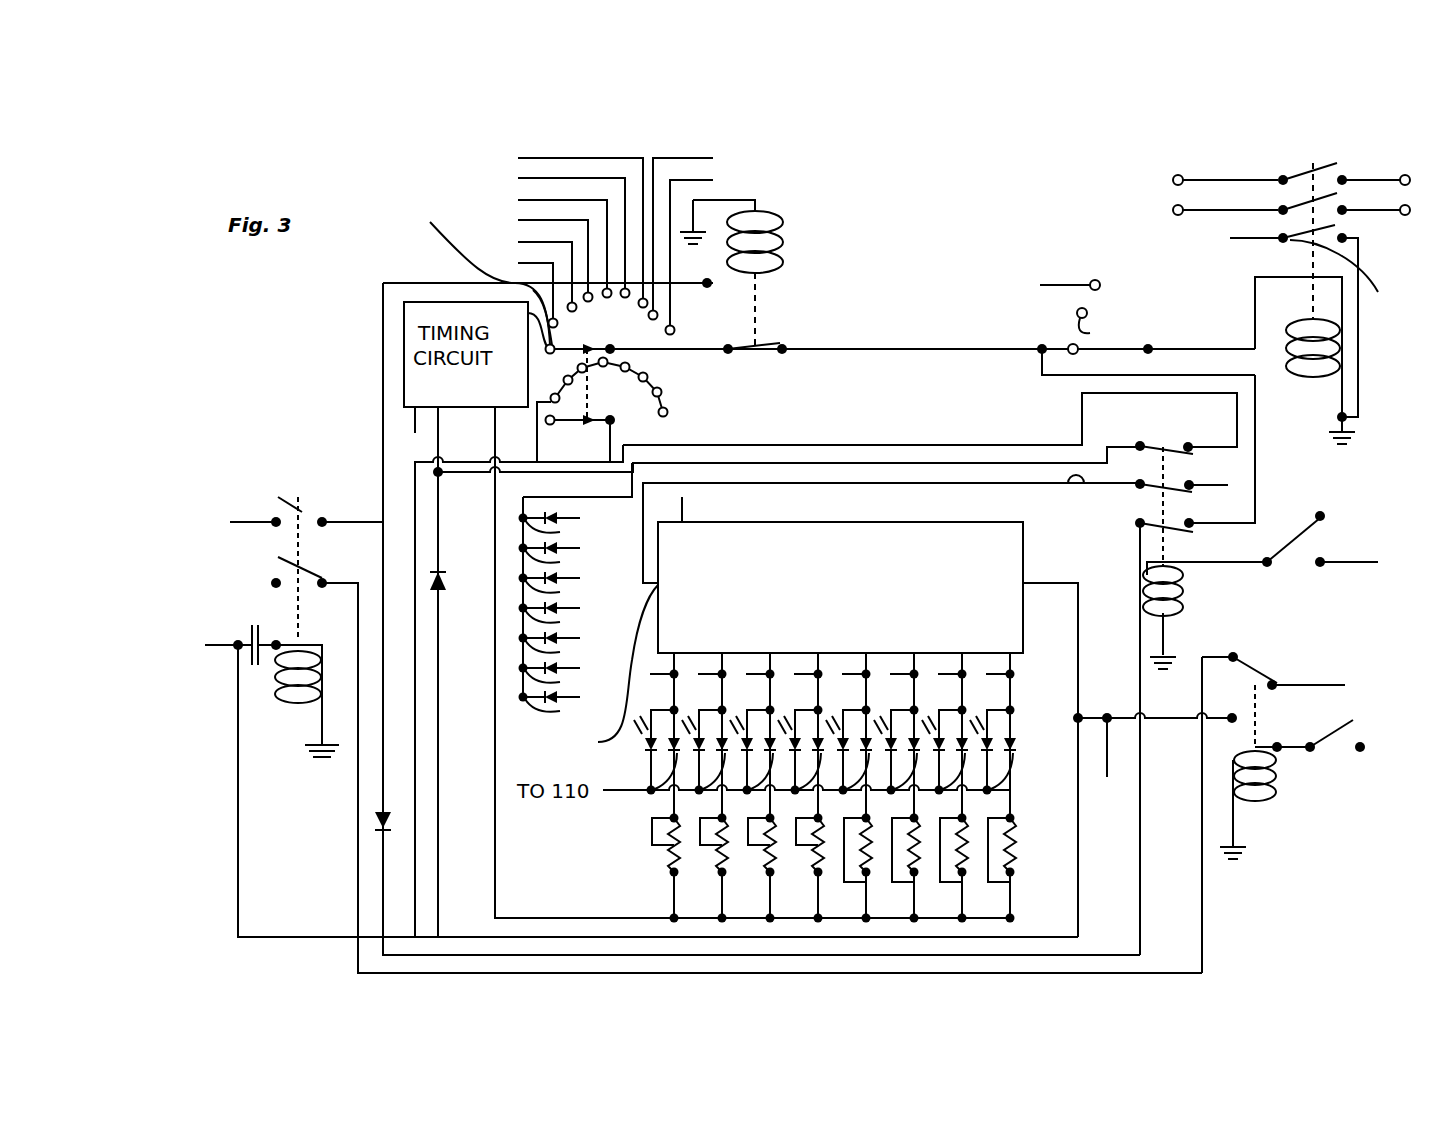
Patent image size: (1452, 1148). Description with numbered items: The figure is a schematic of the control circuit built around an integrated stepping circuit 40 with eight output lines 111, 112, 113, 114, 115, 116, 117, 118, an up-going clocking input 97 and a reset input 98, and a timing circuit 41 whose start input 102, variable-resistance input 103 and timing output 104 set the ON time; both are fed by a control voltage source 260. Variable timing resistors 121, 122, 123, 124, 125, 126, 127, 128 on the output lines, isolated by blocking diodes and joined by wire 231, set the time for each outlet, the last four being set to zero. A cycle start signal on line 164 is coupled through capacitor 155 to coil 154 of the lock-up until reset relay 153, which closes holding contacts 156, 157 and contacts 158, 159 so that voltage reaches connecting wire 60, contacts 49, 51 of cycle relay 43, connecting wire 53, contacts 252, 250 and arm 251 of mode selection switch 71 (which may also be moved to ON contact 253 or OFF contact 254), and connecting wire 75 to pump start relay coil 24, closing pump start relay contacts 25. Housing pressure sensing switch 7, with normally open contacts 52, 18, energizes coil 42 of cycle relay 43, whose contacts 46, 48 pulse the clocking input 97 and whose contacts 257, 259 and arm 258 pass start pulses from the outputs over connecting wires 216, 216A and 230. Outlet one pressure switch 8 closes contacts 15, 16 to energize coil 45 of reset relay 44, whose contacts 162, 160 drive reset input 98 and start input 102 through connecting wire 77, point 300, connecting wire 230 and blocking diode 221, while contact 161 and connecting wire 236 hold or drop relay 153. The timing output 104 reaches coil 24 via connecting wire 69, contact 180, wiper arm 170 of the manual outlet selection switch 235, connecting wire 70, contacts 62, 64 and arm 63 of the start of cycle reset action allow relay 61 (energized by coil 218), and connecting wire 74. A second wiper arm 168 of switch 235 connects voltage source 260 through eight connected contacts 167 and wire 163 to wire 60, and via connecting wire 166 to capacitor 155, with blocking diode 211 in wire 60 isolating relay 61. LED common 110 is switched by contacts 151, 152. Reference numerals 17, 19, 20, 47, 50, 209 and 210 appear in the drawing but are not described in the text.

The housing pressure sensing switch 7 is at (1322, 549).
The pressure sensing switch 8 is at (1388, 719).
The normally open contact 15 is at (1312, 750).
The normally open contact 16 is at (1360, 752).
The relay switch arm 17 is at (1319, 730).
The normally open contact 18 is at (1268, 568).
The relay contact 19 is at (1328, 514).
The relay switch arm 20 is at (1288, 547).
The pump start relay coil 24 is at (1305, 323).
The pump start relay contacts 25 is at (1243, 218).
The stepping circuit 40 is at (885, 522).
The timing circuit 41 is at (383, 305).
The coil of cycle relay 42 is at (1187, 578).
The cycle relay 43 is at (1168, 545).
The reset relay 44 is at (1268, 657).
The coil of reset relay 45 is at (1275, 800).
The contact of cycle relay 46 is at (1096, 495).
The relay contact 47 is at (1158, 480).
The contact of cycle relay 48 is at (1195, 488).
The contact of cycle relay 49 is at (1140, 535).
The relay contact 50 is at (1140, 518).
The contact of cycle relay 51 is at (1197, 526).
The normally open contact 52 is at (1322, 566).
The connecting wire 53 is at (1270, 460).
The connecting wire 60 is at (383, 357).
The start of cycle reset action allow relay 61 is at (773, 300).
The contact of relay 61 62 is at (730, 352).
The arm of relay 61 63 is at (768, 340).
The contact of relay 61 64 is at (784, 349).
The connecting wire 69 is at (475, 283).
The connecting wire 70 is at (685, 349).
The controller mode selection switch 71 is at (1060, 307).
The connecting wire 74 is at (888, 349).
The connecting wire 75 is at (1255, 288).
The connecting wire 77 is at (1170, 718).
The clocking input 97 is at (612, 671).
The reset input 98 is at (1025, 583).
The start input 102 is at (440, 408).
The variable resistance input 103 is at (495, 410).
The timing output 104 is at (528, 313).
The LED common 110 is at (1264, 335).
The output line one 111 is at (657, 689).
The output line two 112 is at (705, 689).
The output line 113 is at (753, 689).
The output line four 114 is at (801, 689).
The output line 115 is at (849, 689).
The output line 116 is at (897, 689).
The output line 117 is at (945, 689).
The output line 118 is at (993, 689).
The variable timing resistor 121 is at (667, 856).
The variable timing resistor 122 is at (715, 856).
The variable timing resistor 123 is at (763, 856).
The variable timing resistor 124 is at (811, 856).
The variable timing resistor 125 is at (859, 860).
The variable timing resistor 126 is at (907, 860).
The variable timing resistor 127 is at (955, 860).
The variable timing resistor 128 is at (1003, 860).
The LED common contact 151 is at (1355, 272).
The LED common contact 152 is at (1347, 228).
The lock-up until reset relay 153 is at (306, 495).
The coil of relay 153 154 is at (285, 705).
The coupling capacitor 155 is at (258, 668).
The holding contact 156 is at (270, 583).
The holding contact 157 is at (322, 578).
The contact of relay 153 158 is at (277, 512).
The contact of relay 153 159 is at (326, 518).
The contact of reset relay 160 is at (1230, 712).
The contact of reset relay 161 is at (1228, 652).
The contact of reset relay 162 is at (1275, 682).
The wire 163 is at (550, 426).
The cycle start signal line 164 is at (220, 656).
The connecting wire 166 is at (328, 937).
The connected contacts 167 is at (668, 400).
The second rotary switch wiper arm 168 is at (614, 424).
The rotary switch wiper arm 170 is at (580, 368).
The contact 180 is at (467, 277).
The power source 209 is at (1110, 193).
The load 210 is at (1443, 188).
The blocking diode 211 is at (398, 818).
The connecting wire 216 is at (748, 445).
The connecting wire 216A is at (848, 463).
The coil of relay 61 218 is at (783, 235).
The blocking diode 221 is at (440, 572).
The connecting wire 230 is at (440, 693).
The wire 231 is at (585, 918).
The manual outlet selection switch 235 is at (580, 346).
The connecting wire 236 is at (358, 880).
The contact of mode switch 250 is at (1152, 348).
The wiper arm of mode switch 251 is at (1135, 348).
The contact of mode switch 252 is at (1068, 346).
The ON contact 253 is at (1098, 280).
The OFF contact 254 is at (1109, 335).
The contact of cycle relay 257 is at (1140, 440).
The arm of cycle relay 258 is at (1163, 440).
The contact of cycle relay 259 is at (1190, 446).
The control voltage source 260 is at (413, 420).
The point 300 is at (1107, 763).